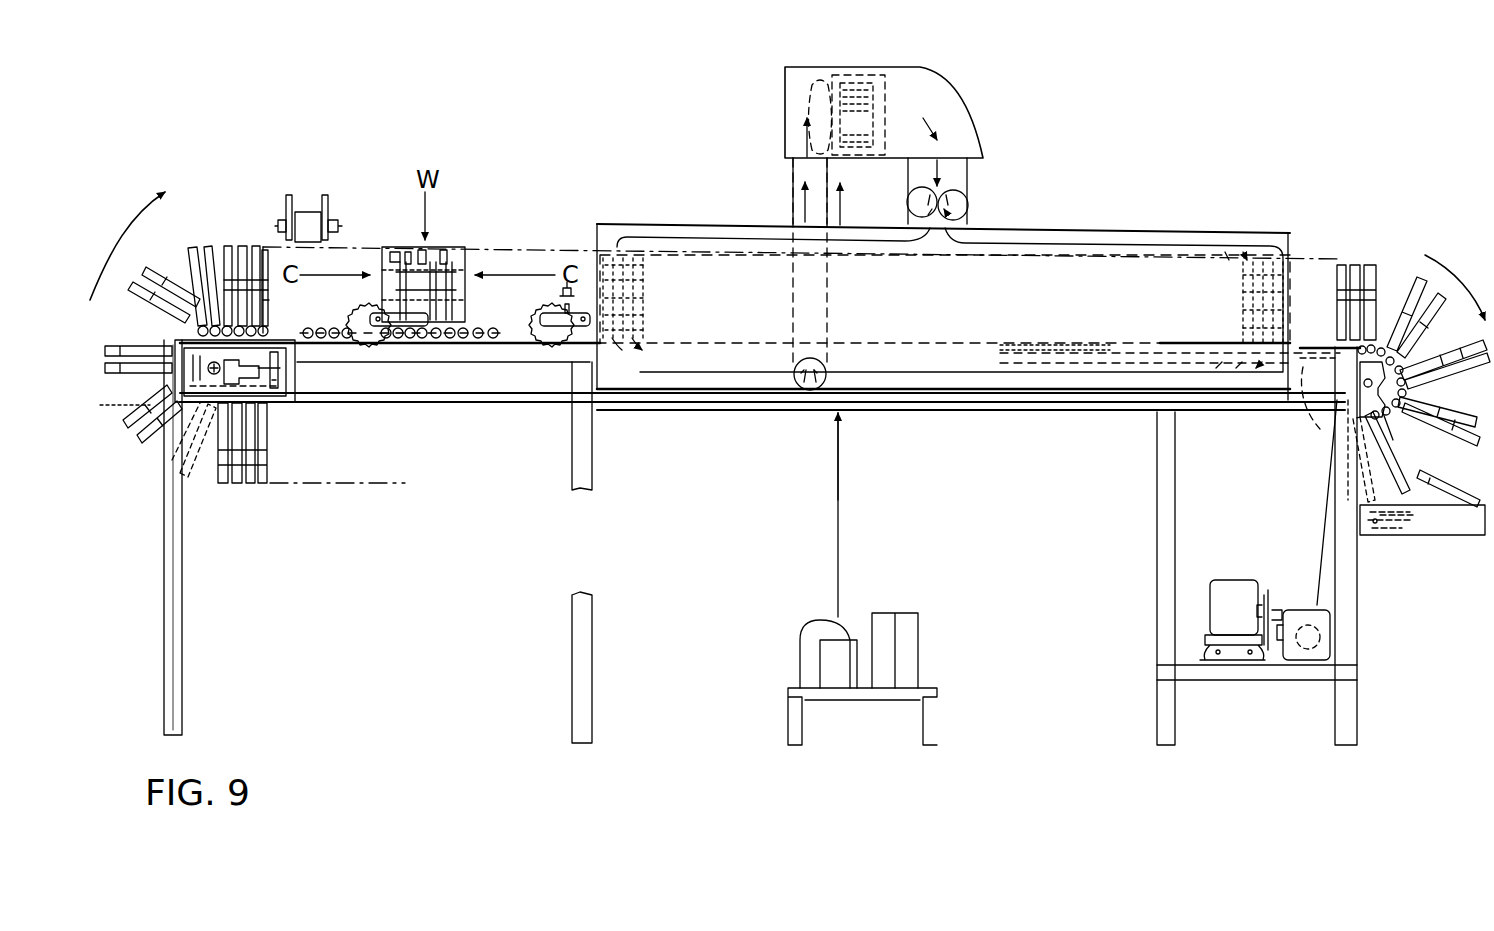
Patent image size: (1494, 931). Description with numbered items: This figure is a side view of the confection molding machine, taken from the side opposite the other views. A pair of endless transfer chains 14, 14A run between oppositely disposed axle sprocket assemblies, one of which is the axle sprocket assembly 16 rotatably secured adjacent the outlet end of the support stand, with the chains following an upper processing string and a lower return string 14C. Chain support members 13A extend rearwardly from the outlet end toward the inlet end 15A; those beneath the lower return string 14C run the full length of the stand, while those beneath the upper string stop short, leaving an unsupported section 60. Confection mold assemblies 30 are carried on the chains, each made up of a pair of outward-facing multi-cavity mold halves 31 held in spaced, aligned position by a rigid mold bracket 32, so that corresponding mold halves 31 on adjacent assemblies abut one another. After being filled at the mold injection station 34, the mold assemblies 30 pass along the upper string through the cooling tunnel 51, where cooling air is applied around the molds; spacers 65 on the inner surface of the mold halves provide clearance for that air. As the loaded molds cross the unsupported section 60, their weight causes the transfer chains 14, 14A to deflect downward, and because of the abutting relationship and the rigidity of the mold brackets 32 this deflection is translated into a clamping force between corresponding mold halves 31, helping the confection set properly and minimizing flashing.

The chain support members 13A is at (470, 398).
The endless transfer chain 14 is at (333, 333).
The endless transfer chain 14A is at (277, 332).
The lower return string 14C is at (253, 393).
The inlet end 15A is at (187, 323).
The axle sprocket assembly 16 is at (1363, 413).
The confection mold assembly 30 is at (1372, 252).
The multi-cavity mold half 31 is at (432, 245).
The mold bracket 32 is at (263, 300).
The mold injection station 34 is at (312, 225).
The cooling tunnel 51 is at (1120, 233).
The unsupported section 60 is at (713, 343).
The spacers 65 is at (462, 255).